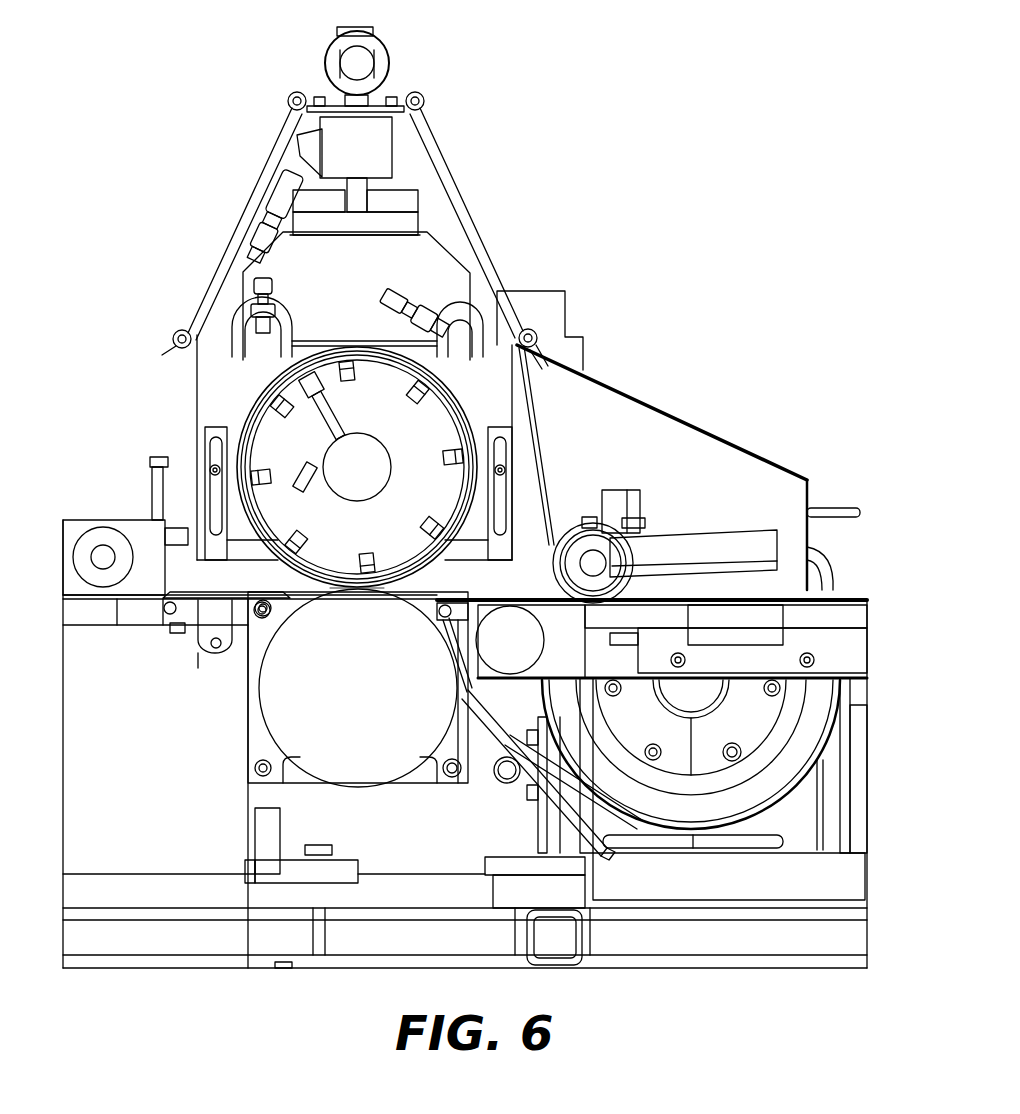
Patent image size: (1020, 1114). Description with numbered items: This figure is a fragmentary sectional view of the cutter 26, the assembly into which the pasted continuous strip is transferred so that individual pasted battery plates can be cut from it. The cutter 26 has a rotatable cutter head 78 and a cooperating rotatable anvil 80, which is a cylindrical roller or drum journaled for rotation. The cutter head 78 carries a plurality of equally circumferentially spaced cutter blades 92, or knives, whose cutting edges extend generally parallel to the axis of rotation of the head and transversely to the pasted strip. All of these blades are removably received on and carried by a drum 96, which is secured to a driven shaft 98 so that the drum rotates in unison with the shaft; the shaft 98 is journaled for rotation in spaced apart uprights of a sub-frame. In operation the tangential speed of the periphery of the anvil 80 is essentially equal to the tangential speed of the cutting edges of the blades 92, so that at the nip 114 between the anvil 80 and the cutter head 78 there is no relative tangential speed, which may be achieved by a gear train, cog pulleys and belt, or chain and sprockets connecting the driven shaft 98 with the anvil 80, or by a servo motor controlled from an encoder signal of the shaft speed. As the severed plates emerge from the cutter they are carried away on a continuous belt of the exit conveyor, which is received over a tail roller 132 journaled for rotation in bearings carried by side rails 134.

The cutter 26 is at (262, 100).
The rotatable cutter head 78 is at (236, 404).
The cutter blades 92 is at (262, 394).
The drum 96 is at (478, 400).
The driven shaft 98 is at (393, 478).
The nip 114 is at (318, 590).
The tail roller 132 is at (448, 622).
The side rails 134 is at (545, 637).
The rotatable anvil 80 is at (252, 713).